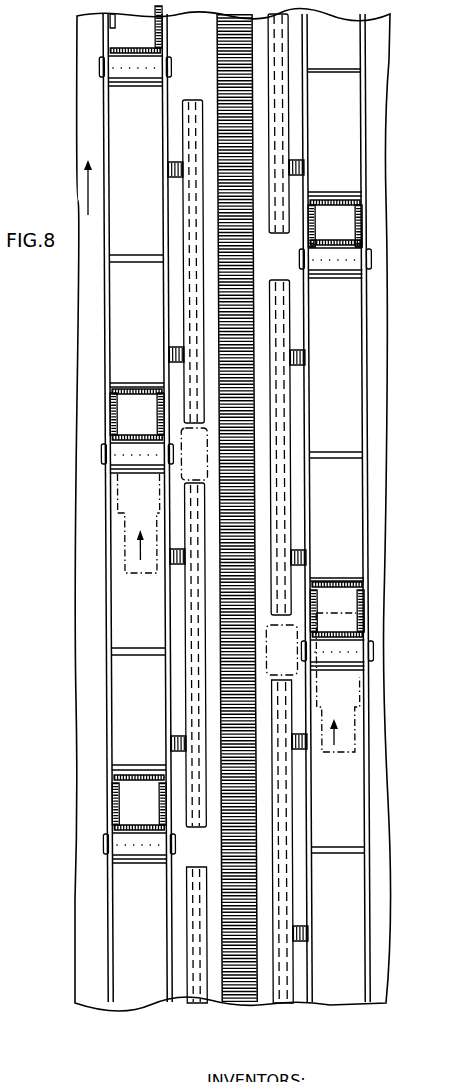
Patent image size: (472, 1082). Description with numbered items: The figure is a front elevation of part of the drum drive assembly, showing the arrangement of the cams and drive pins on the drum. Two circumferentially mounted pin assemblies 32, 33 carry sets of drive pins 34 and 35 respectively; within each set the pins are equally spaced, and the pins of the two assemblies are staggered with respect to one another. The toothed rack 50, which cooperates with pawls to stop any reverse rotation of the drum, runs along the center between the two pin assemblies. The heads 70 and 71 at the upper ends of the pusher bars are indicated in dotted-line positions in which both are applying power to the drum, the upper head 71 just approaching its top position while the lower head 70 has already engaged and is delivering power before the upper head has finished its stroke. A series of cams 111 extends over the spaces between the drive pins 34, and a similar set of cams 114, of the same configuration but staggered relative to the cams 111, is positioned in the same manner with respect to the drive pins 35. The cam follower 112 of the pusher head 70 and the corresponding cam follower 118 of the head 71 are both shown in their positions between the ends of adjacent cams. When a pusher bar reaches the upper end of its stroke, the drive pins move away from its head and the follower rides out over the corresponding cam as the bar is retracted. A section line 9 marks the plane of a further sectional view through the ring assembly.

The section line 9- 9 is at (106, 480).
The pin assembly 32 is at (336, 546).
The pin assembly 33 is at (133, 613).
The drive pins 34 is at (341, 268).
The drive pins 35 is at (112, 451).
The toothed rack 50 is at (247, 986).
The head 70 is at (358, 691).
The head 71 is at (153, 417).
The cams 111 is at (272, 236).
The cam follower 112 is at (283, 650).
The cams 114 is at (196, 100).
The cam follower 118 is at (197, 454).